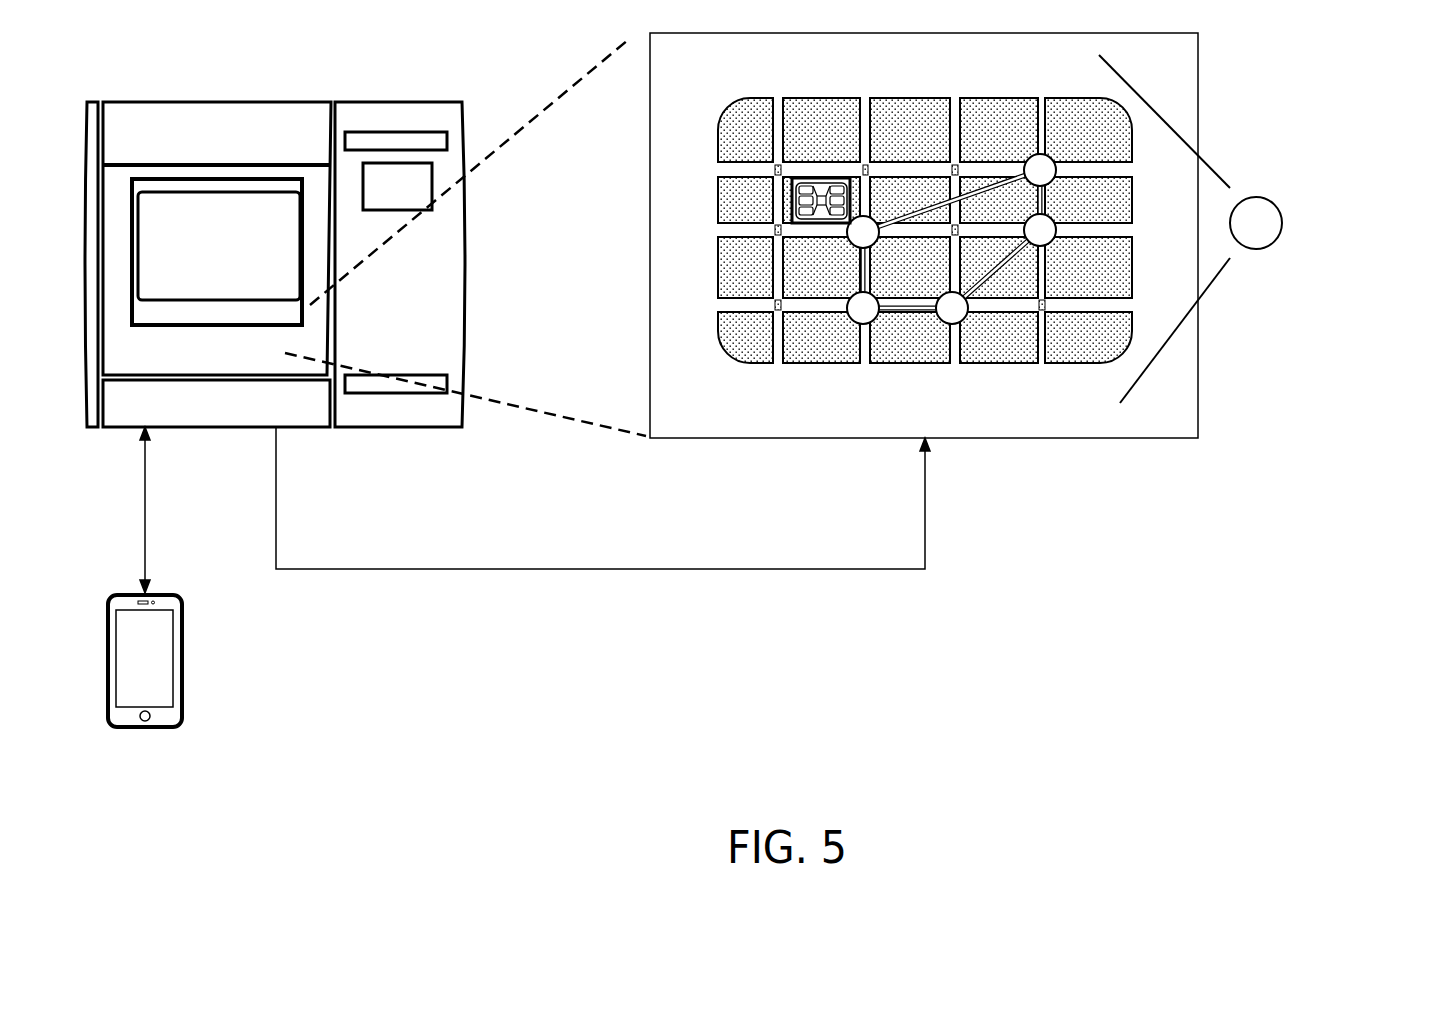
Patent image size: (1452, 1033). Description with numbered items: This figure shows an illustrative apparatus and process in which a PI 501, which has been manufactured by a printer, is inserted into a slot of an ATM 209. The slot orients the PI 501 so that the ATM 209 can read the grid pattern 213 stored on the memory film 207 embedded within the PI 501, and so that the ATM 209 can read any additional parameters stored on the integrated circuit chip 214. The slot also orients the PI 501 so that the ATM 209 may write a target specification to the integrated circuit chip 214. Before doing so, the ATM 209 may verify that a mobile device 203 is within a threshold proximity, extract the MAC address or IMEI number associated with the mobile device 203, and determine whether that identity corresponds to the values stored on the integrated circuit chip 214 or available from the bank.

The ATM 209 is at (232, 102).
The mobile device 203 is at (158, 595).
The memory film 207 is at (910, 98).
The grid pattern 213 is at (903, 307).
The integrated circuit chip 214 is at (790, 198).
The PI 501 is at (1200, 123).